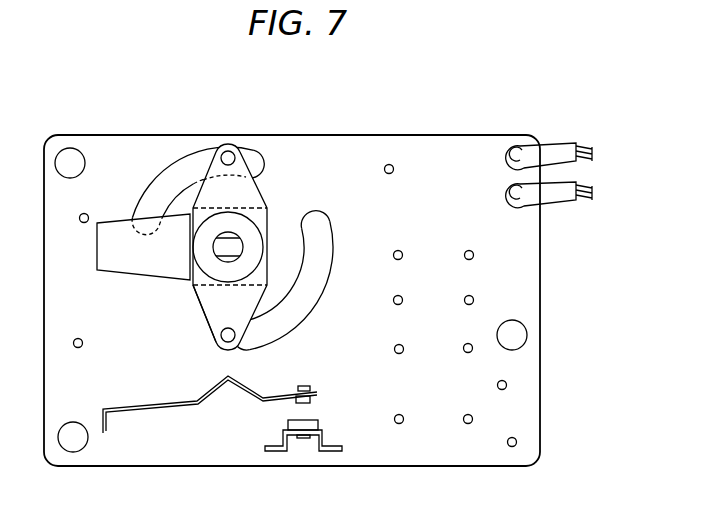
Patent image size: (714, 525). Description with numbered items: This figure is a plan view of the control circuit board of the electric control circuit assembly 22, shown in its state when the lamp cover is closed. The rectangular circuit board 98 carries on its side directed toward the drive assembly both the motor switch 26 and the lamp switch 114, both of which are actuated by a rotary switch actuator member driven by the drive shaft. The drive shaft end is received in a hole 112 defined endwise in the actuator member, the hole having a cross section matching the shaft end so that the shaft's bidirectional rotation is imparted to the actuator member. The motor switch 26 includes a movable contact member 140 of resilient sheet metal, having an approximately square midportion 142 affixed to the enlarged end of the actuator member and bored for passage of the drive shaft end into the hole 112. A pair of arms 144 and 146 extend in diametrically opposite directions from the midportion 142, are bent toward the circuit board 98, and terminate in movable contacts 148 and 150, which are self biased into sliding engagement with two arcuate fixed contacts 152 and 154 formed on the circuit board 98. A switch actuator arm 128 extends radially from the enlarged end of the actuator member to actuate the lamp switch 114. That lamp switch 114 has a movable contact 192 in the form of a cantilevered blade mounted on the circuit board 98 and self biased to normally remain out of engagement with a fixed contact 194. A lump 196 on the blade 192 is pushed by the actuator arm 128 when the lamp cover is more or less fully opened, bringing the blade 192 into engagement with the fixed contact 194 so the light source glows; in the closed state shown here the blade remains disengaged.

The electric control circuit assembly 22 is at (92, 128).
The motor switch 26 is at (253, 227).
The circuit board 98 is at (465, 143).
The hole 112 is at (230, 247).
The lamp switch 114 is at (260, 399).
The switch actuator arm 128 is at (115, 222).
The movable contact member 140 is at (253, 227).
The midportion 142 is at (268, 212).
The arm 144 is at (253, 190).
The arm 146 is at (203, 315).
The movable contact 148 is at (230, 145).
The movable contact 150 is at (222, 340).
The fixed contact 152 is at (172, 165).
The fixed contact 154 is at (315, 293).
The movable contact 192 is at (152, 408).
The fixed contact 194 is at (337, 397).
The lump 196 is at (250, 377).